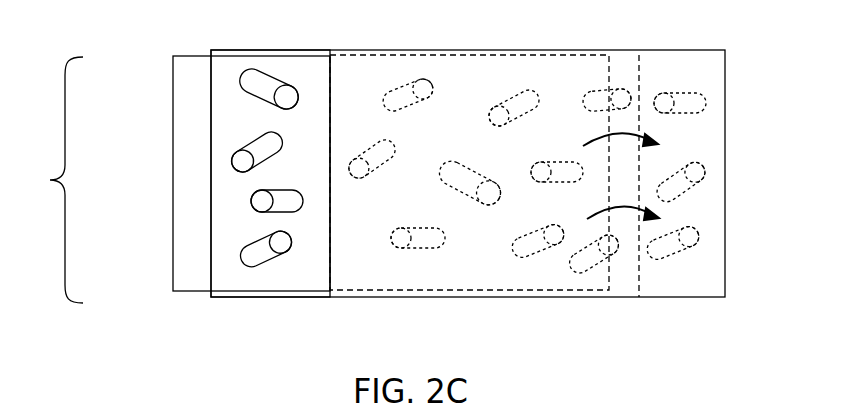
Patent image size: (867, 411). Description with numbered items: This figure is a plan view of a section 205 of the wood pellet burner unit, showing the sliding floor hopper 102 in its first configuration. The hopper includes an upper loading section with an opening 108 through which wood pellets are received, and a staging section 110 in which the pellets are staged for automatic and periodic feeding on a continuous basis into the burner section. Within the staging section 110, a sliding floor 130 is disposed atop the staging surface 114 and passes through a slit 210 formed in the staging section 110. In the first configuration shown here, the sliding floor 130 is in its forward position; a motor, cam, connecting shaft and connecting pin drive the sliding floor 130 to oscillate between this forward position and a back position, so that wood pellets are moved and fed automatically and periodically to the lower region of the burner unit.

The sliding floor hopper 102 is at (47, 180).
The opening 108 is at (231, 104).
The staging section 110 is at (560, 50).
The staging surface 114 is at (642, 282).
The sliding floor 130 is at (173, 200).
The section 205 is at (772, 68).
The slit 210 is at (201, 299).